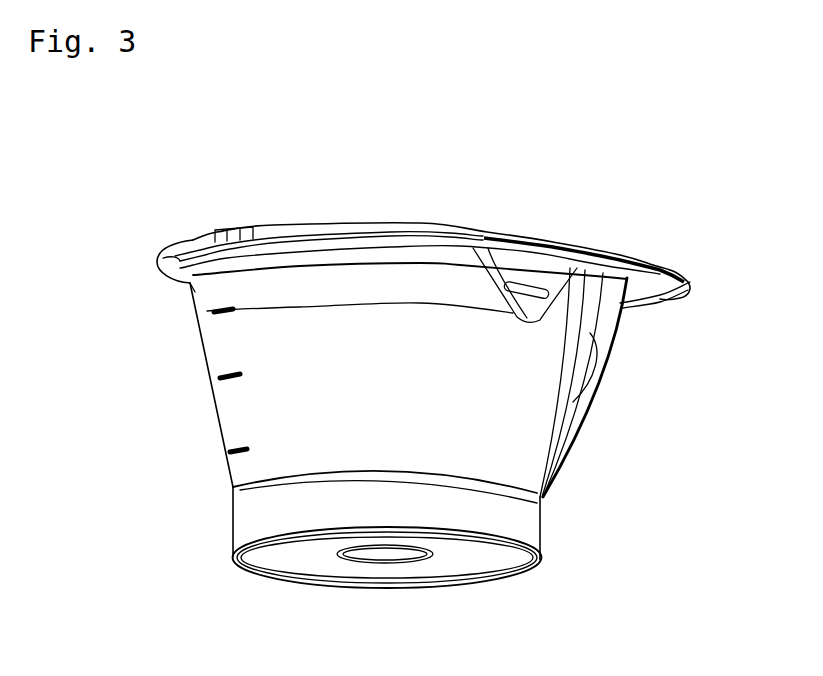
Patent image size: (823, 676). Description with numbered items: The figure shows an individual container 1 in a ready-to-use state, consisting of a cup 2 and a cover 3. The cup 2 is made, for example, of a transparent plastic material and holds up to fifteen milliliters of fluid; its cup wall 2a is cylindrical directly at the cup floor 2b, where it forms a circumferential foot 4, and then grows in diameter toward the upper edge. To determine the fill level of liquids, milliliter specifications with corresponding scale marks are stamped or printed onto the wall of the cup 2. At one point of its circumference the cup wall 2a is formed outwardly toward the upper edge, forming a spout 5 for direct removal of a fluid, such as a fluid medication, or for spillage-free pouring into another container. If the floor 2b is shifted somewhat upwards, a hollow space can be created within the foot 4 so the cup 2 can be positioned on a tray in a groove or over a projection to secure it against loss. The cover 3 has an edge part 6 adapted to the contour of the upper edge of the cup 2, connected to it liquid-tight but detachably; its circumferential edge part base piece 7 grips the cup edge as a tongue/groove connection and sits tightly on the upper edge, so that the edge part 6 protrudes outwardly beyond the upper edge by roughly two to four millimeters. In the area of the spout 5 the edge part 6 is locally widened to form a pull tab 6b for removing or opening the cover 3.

The individual container 1 is at (632, 173).
The cup 2 is at (572, 459).
The cup wall 2a is at (565, 413).
The cup floor 2b is at (437, 568).
The cover 3 is at (550, 213).
The circumferential foot 4 is at (540, 543).
The spout 5 is at (600, 336).
The edge part 6 is at (157, 257).
The pull tab 6b is at (677, 300).
The edge part base piece 7 is at (190, 283).